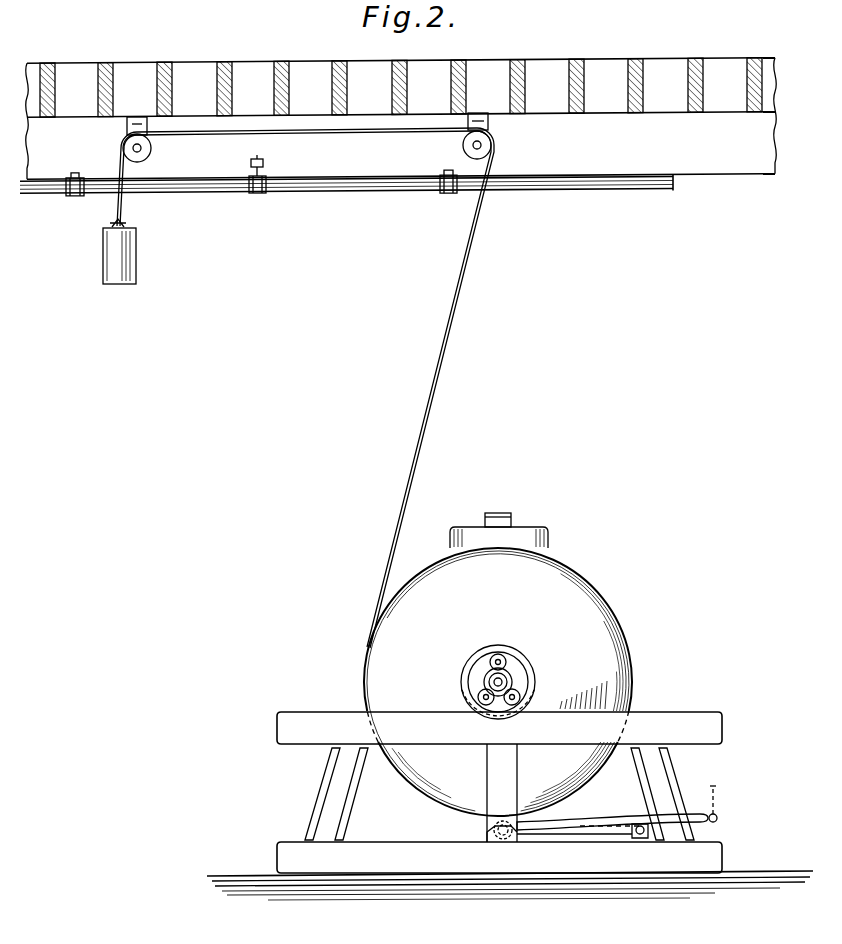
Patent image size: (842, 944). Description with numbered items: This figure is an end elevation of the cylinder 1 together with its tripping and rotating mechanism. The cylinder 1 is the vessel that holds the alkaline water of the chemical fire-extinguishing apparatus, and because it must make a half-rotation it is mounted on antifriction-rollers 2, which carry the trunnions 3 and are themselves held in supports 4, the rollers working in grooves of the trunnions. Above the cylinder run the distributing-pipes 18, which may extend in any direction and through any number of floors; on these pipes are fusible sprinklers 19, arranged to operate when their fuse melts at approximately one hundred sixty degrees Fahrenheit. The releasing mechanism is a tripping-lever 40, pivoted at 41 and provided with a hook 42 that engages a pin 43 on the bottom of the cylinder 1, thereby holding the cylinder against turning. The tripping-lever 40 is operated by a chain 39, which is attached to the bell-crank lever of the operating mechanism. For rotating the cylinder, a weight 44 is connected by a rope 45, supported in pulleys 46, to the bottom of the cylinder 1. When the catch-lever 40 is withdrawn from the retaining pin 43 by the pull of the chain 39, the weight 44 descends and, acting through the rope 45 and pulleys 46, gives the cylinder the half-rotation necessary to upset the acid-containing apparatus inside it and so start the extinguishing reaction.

The cylinder 1 is at (618, 608).
The antifriction-rollers 2 is at (515, 655).
The trunnions 3 is at (512, 678).
The supports 4 is at (478, 668).
The distributing-pipes 18 is at (554, 190).
The fusible sprinklers 19 is at (248, 163).
The chain 39 is at (716, 798).
The tripping-lever 40 is at (592, 818).
The pivot 41 is at (630, 839).
The hook 42 is at (500, 840).
The pin 43 is at (503, 818).
The weight 44 is at (102, 258).
The rope 45 is at (326, 133).
The pulleys 46 is at (147, 155).